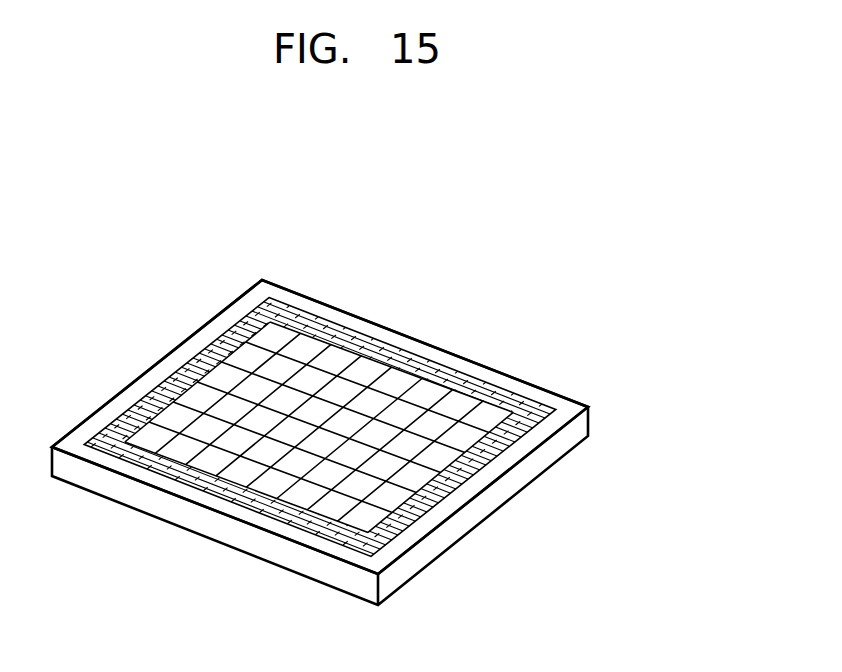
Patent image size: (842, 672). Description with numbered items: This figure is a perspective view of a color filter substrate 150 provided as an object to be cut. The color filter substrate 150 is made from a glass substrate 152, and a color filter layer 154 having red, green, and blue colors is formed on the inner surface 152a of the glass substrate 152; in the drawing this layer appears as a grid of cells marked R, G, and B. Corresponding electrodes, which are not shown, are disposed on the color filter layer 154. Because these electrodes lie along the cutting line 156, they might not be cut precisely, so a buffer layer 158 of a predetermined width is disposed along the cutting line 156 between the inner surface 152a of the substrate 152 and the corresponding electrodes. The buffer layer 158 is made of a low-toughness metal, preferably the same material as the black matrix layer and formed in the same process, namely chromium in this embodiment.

The color filter substrate 150 is at (520, 259).
The glass substrate 152 is at (578, 430).
The inner surface 152a is at (572, 406).
The color filter layer 154 is at (455, 385).
The cutting line 156 is at (290, 305).
The buffer layer 158 is at (213, 350).